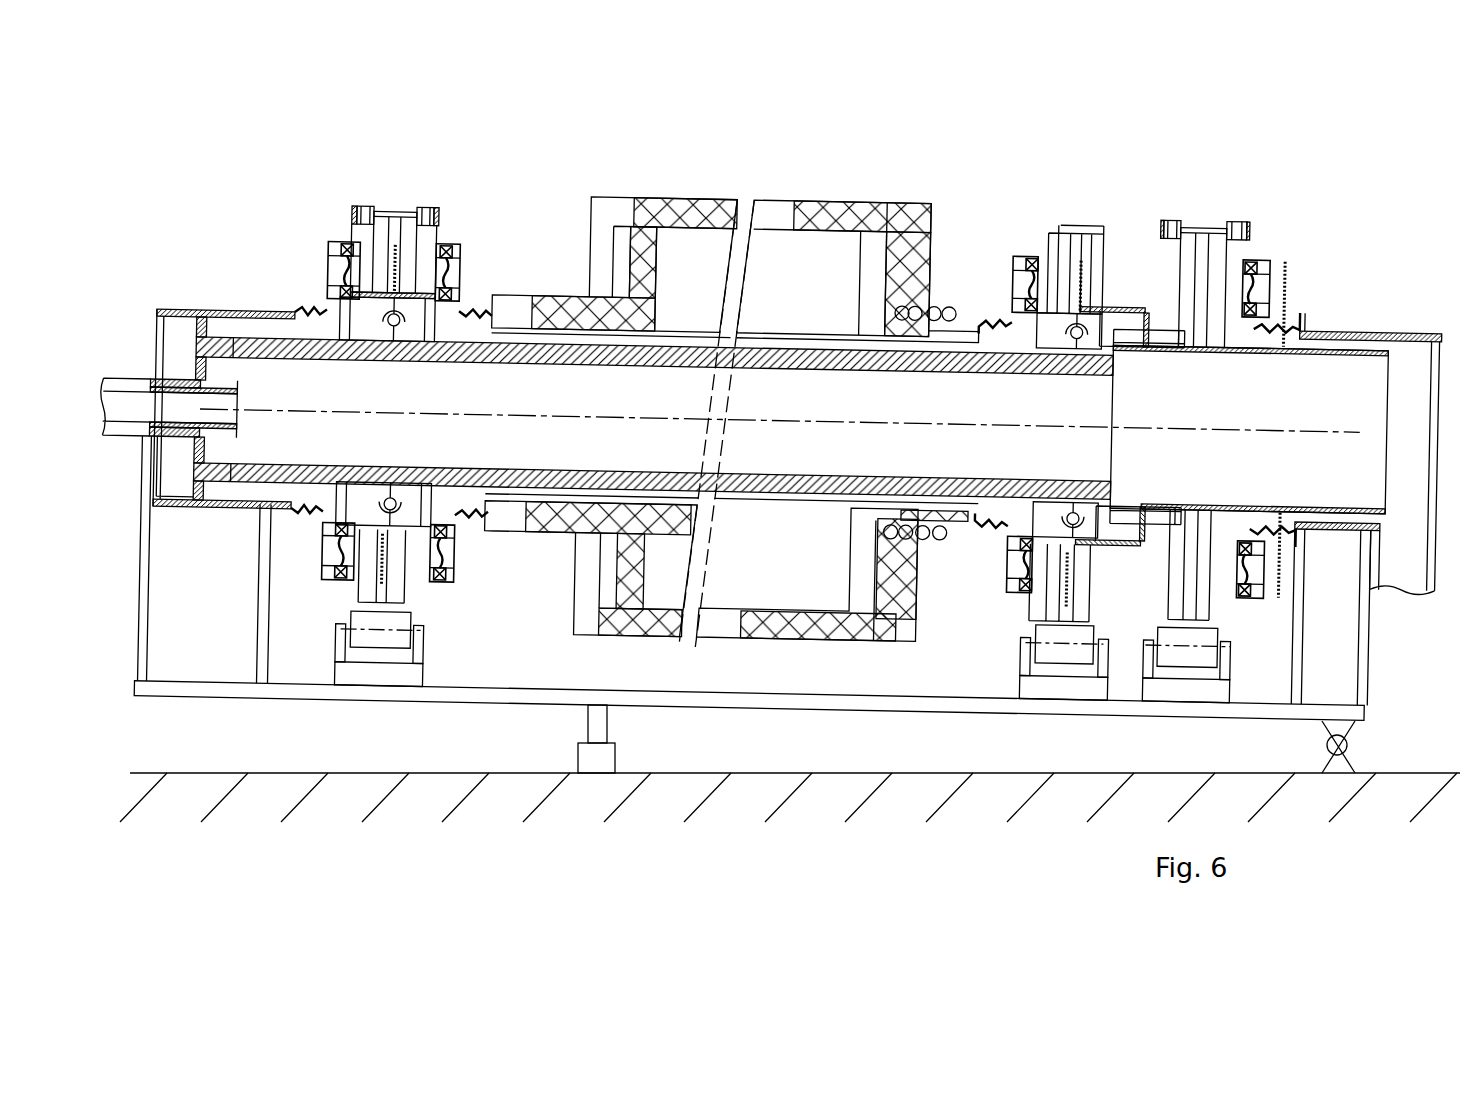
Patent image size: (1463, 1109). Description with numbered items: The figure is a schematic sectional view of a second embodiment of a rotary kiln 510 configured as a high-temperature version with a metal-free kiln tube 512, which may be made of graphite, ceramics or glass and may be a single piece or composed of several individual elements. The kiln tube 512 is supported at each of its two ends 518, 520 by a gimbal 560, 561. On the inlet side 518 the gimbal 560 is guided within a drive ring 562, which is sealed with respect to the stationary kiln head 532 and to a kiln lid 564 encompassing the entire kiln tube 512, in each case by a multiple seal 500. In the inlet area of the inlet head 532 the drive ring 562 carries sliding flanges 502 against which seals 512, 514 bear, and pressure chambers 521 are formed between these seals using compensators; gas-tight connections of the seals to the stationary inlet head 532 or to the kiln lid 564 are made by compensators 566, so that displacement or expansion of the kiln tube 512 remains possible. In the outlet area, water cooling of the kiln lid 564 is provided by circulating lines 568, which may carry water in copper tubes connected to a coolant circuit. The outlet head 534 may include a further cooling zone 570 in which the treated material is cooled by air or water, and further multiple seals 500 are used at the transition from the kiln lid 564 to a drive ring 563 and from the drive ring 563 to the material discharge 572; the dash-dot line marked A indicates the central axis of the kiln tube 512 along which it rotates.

The multiple seal 500 is at (333, 180).
The sliding flange 502 is at (353, 242).
The rotary kiln 510 is at (380, 160).
The kiln tube 512 is at (205, 337).
The seal 514 is at (338, 262).
The inlet-side end 518 is at (180, 238).
The outlet-side end 520 is at (955, 227).
The pressure chamber 521 is at (338, 280).
The kiln head 532 is at (190, 192).
The outlet head 534 is at (1125, 263).
The gimbal 560 is at (350, 327).
The gimbal 561 is at (1041, 346).
The drive ring 562 is at (372, 553).
The drive ring 563 is at (1043, 300).
The kiln lid 564 is at (647, 198).
The compensator 566 is at (308, 312).
The circulating line 568 is at (922, 300).
The cooling zone 570 is at (1145, 300).
The material discharge 572 is at (1398, 330).
The axis A is at (1222, 427).